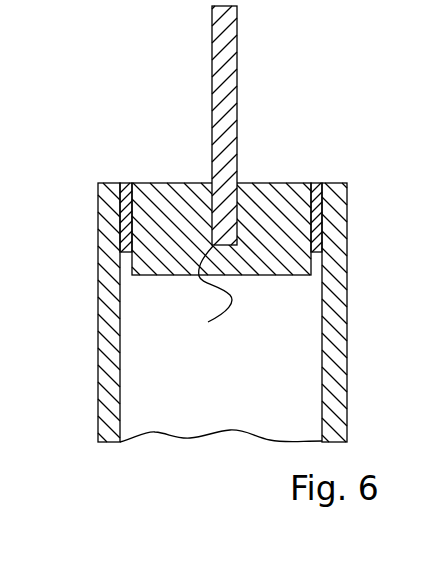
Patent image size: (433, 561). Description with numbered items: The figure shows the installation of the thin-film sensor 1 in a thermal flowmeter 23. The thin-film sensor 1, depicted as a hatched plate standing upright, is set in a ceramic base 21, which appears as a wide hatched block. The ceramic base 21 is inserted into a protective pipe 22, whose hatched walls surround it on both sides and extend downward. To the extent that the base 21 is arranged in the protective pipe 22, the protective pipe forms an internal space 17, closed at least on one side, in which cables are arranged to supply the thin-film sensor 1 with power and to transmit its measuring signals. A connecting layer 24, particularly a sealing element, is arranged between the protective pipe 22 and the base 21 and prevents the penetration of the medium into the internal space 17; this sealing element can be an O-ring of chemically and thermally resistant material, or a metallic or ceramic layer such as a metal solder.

The thin-film sensor 1 is at (210, 60).
The internal space 17 is at (131, 386).
The ceramic base 21 is at (158, 195).
The protective pipe 22 is at (103, 253).
The thermal flowmeter 23 is at (190, 224).
The connecting layer 24 is at (317, 192).